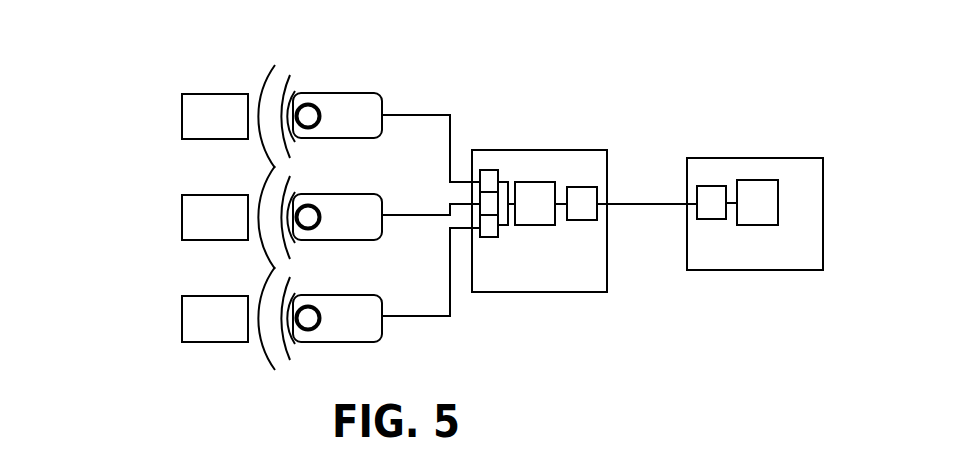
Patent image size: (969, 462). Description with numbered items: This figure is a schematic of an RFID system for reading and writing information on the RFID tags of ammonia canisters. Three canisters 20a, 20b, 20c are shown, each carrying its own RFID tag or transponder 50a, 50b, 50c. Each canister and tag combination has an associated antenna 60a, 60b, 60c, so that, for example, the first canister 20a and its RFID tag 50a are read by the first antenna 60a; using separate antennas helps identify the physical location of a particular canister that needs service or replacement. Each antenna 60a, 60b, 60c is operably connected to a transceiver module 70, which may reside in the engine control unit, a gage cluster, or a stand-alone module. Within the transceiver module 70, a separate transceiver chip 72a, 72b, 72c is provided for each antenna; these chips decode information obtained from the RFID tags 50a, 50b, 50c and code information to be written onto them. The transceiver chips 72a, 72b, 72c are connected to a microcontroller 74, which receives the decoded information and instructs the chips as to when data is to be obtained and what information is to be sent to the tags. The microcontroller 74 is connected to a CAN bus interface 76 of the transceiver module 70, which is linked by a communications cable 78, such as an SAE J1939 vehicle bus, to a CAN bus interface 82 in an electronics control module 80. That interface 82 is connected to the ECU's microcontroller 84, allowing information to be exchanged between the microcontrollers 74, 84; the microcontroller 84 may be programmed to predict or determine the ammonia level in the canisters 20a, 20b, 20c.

The first ammonia canister 20a is at (126, 129).
The second ammonia canister 20b is at (128, 235).
The third ammonia canister 20c is at (135, 330).
The RFID tag 50a is at (210, 102).
The RFID tag 50b is at (215, 202).
The RFID tag 50c is at (213, 303).
The first antenna 60a is at (347, 102).
The second antenna 60b is at (333, 205).
The third antenna 60c is at (340, 300).
The transceiver module 70 is at (542, 150).
The transceiver chip 72a is at (485, 177).
The transceiver chip 72b is at (490, 207).
The transceiver chip 72c is at (485, 231).
The microcontroller 74 is at (547, 187).
The CAN bus interface 76 is at (580, 187).
The communications cable 78 is at (638, 207).
The electronics control module (ECU) 80 is at (760, 158).
The CAN bus interface 82 is at (705, 187).
The microcontroller 84 is at (772, 217).